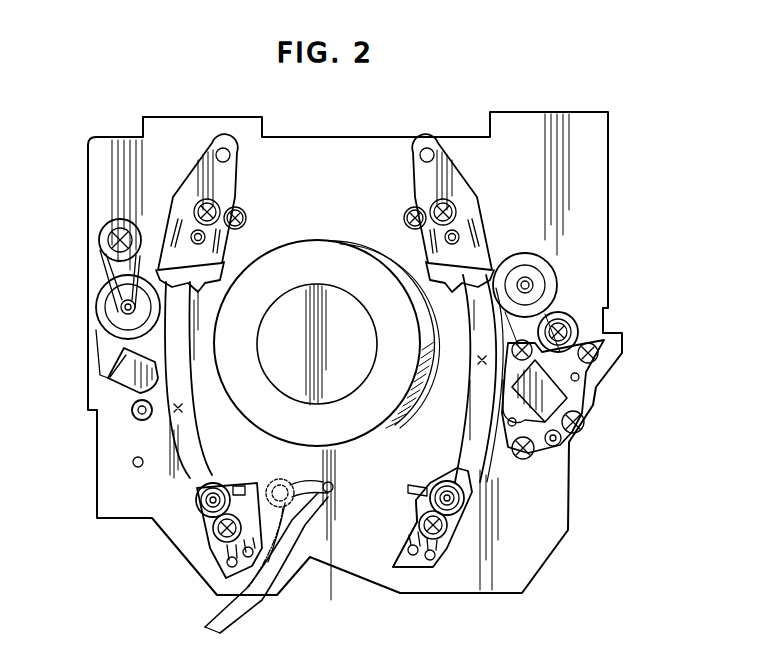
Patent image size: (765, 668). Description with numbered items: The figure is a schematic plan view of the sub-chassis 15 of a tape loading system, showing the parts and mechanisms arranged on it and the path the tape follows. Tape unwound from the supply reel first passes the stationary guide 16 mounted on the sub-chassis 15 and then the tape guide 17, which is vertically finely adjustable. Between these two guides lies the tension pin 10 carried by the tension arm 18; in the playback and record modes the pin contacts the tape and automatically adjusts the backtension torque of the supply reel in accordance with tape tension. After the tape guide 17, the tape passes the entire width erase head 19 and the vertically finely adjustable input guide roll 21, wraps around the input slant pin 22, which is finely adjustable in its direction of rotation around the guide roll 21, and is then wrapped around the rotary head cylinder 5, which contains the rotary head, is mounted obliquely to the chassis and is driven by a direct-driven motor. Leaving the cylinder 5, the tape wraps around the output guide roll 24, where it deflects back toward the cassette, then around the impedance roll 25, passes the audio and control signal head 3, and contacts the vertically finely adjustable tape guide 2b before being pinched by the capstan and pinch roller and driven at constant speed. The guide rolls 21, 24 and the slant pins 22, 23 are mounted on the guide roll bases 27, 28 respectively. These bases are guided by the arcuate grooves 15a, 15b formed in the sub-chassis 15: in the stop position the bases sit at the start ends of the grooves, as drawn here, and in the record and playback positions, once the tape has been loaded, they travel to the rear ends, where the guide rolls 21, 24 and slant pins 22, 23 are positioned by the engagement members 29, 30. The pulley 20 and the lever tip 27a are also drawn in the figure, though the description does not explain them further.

The tape guide 2b is at (572, 453).
The audio and control signal head 3 is at (487, 445).
The rotary head cylinder 5 is at (355, 447).
The tension pin 10 is at (285, 461).
The sub-chassis 15 is at (346, 575).
The arcuate groove 15a is at (183, 410).
The arcuate groove 15b is at (478, 363).
The stationary guide 16 is at (134, 466).
The tape guide 17 is at (136, 418).
The tension arm 18 is at (265, 610).
The entire width erase head 19 is at (104, 367).
The drive pulley 20 is at (98, 318).
The input guide roll 21 is at (196, 500).
The input slant pin 22 is at (236, 486).
The slant pin 23 is at (410, 489).
The output guide roll 24 is at (415, 508).
The impedance roll 25 is at (538, 261).
The guide roll base 27 is at (222, 574).
The lever tip 27a is at (218, 613).
The guide roll base 28 is at (415, 573).
The engagement member 29 is at (225, 280).
The engagement member 30 is at (480, 265).